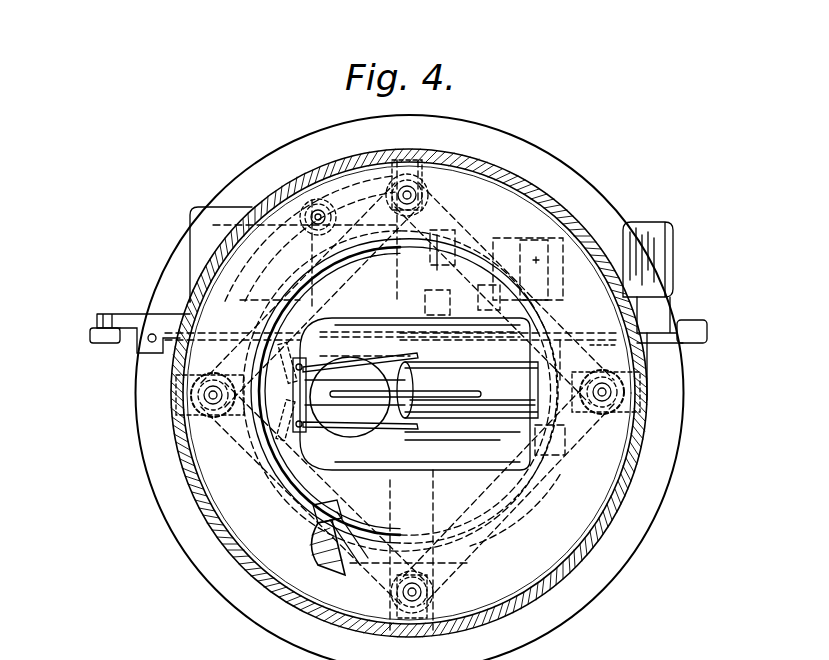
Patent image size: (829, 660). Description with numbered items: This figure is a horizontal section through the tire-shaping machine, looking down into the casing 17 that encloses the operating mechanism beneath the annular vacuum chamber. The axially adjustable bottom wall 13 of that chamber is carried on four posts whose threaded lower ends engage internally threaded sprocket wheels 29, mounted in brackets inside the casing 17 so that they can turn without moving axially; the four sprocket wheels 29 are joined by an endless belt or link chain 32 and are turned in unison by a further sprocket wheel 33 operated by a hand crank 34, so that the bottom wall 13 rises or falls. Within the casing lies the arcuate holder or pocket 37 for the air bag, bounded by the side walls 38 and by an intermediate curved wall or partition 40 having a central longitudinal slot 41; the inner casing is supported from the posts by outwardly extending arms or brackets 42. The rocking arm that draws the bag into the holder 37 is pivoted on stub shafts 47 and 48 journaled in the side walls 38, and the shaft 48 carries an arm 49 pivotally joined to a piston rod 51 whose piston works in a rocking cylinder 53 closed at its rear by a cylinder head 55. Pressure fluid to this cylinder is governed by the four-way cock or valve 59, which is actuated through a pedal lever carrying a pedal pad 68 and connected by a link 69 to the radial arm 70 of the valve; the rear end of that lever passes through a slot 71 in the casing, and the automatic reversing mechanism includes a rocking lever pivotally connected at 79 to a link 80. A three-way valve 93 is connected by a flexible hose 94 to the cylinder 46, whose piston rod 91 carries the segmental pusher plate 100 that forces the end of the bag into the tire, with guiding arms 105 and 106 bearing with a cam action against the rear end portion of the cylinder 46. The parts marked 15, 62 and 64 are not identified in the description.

The bottom wall 13 is at (238, 278).
The lever 15 is at (606, 340).
The casing 17 is at (180, 437).
The sprocket wheels 29 is at (425, 200).
The endless belt or link chain 32 is at (258, 452).
The sprocket wheel 33 is at (293, 210).
The hand crank 34 is at (343, 220).
The arcuate holder or pocket 37 is at (363, 452).
The side walls 38 is at (330, 317).
The intermediate curved wall or partition 40 is at (410, 447).
The central longitudinal slot 41 is at (480, 425).
The arms or brackets 42 is at (230, 437).
The cylinder 46 is at (467, 390).
The stub shaft 47 is at (557, 440).
The stub shaft 48 is at (500, 318).
The arm 49 is at (518, 235).
The piston rod 51 is at (473, 236).
The rocking cylinder 53 is at (258, 207).
The cylinder head 55 is at (222, 229).
The four-way cock or valve 59 is at (660, 366).
The rod 62 is at (483, 383).
The disc 64 is at (355, 401).
The pedal pad 68 is at (700, 322).
The link 69 is at (657, 315).
The radial arm 70 is at (592, 335).
The slot 71 is at (110, 313).
The pivotal connection 79 is at (90, 338).
The link 80 is at (113, 333).
The piston rod 91 is at (330, 403).
The three-way valve 93 is at (492, 300).
The flexible hose 94 is at (580, 315).
The segmental pusher plate 100 is at (290, 395).
The guiding arm 105 is at (318, 352).
The guiding arm 106 is at (392, 462).